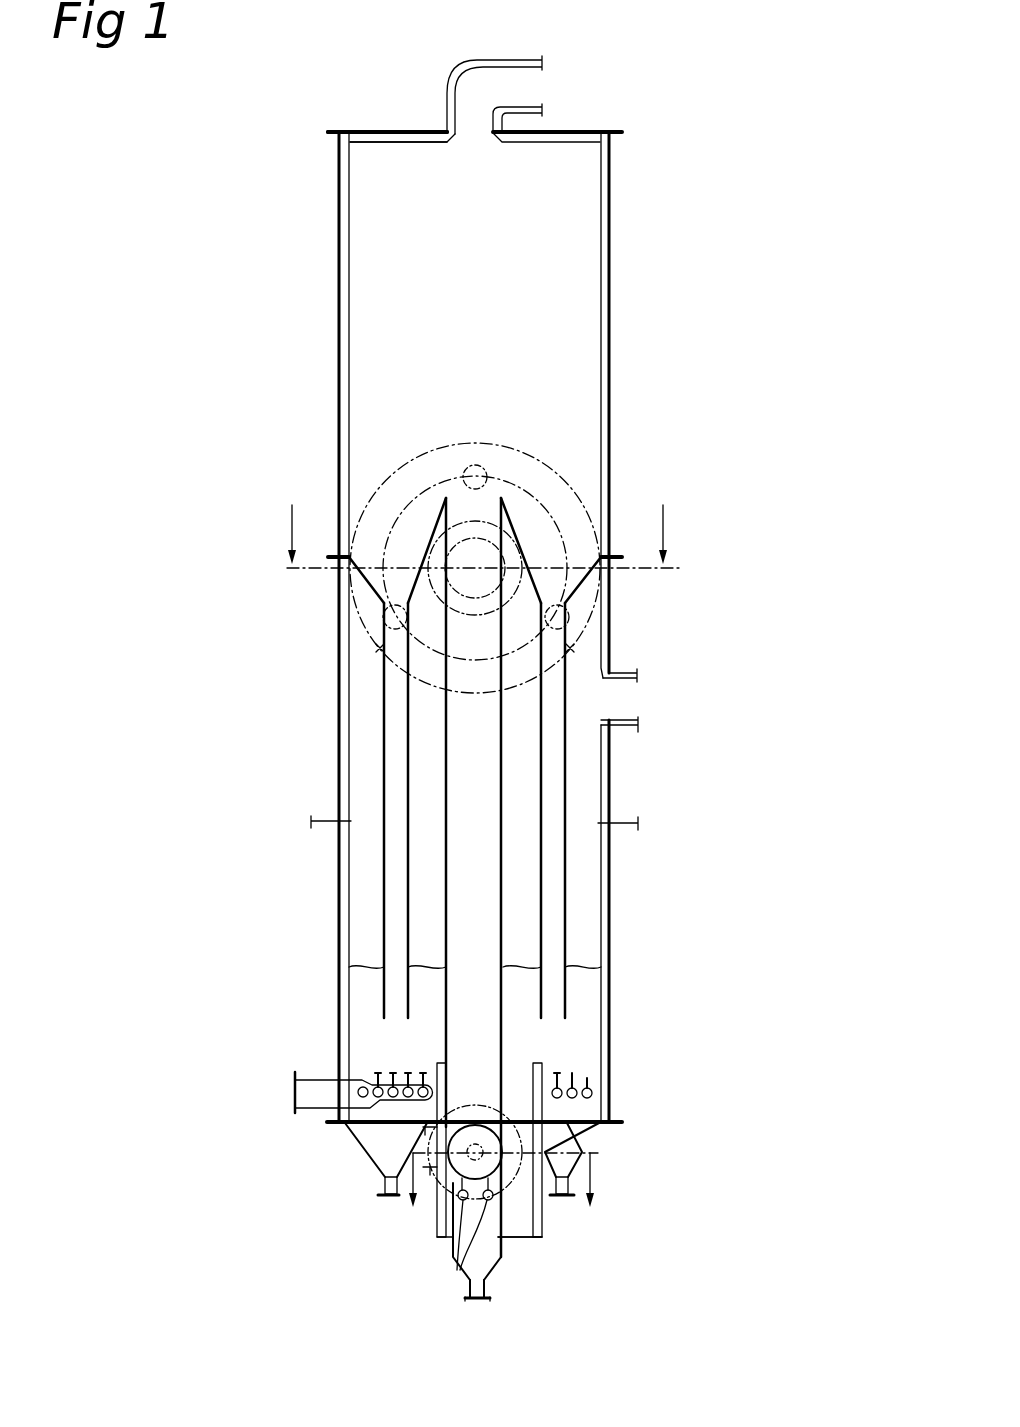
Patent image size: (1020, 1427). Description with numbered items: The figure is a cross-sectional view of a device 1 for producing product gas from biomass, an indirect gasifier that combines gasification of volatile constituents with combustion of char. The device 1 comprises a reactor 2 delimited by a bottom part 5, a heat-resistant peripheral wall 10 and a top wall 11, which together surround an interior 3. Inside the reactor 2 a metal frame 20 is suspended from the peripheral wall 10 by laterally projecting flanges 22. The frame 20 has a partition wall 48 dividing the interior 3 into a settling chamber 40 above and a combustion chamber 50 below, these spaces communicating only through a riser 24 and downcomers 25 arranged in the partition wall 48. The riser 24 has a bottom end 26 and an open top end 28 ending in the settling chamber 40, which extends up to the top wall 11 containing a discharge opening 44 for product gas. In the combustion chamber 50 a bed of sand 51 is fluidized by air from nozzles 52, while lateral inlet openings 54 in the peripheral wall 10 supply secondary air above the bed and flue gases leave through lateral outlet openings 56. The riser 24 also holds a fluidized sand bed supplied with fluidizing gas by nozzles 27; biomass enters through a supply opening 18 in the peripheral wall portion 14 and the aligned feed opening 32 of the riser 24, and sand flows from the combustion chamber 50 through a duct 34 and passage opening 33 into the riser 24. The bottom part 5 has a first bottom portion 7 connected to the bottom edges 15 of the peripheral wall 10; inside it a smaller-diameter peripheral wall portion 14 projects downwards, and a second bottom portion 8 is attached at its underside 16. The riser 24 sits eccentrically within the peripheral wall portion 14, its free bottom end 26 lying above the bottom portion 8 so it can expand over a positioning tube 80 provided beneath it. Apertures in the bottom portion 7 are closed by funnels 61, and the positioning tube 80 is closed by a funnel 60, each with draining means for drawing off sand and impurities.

The device for producing a product gas from biomass 1 is at (650, 186).
The reactor 2 is at (628, 310).
The interior 3 is at (378, 348).
The bottom part 5 is at (606, 1156).
The first bottom portion 7 is at (365, 1130).
The second bottom portion 8 is at (518, 1240).
The peripheral wall 10 is at (338, 396).
The top wall 11 is at (377, 137).
The peripheral wall portion 14 is at (497, 1180).
The bottom edges 15 is at (345, 1122).
The underside 16 is at (548, 1256).
The supply opening 18 is at (428, 1158).
The frame 20 is at (574, 671).
The flanges 22 is at (608, 553).
The riser 24 is at (445, 750).
The downcomers 25 is at (384, 908).
The bottom end 26 is at (540, 1203).
The nozzles 27 is at (470, 1260).
The top end 28 is at (505, 501).
The feed opening 32 is at (465, 1100).
The passage opening 33 is at (505, 1140).
The duct 34 is at (506, 1150).
The settling chamber 40 is at (422, 308).
The discharge opening 44 is at (473, 100).
The partition wall 48 is at (380, 650).
The combustion chamber 50 is at (528, 773).
The bed of sand 51 is at (360, 998).
The nozzles 52 is at (377, 1087).
The lateral inlet openings 54 is at (328, 818).
The lateral outlet openings 56 is at (613, 700).
The funnel 60 is at (465, 1275).
The funnels 61 is at (385, 1153).
The positioning tube 80 is at (488, 1272).